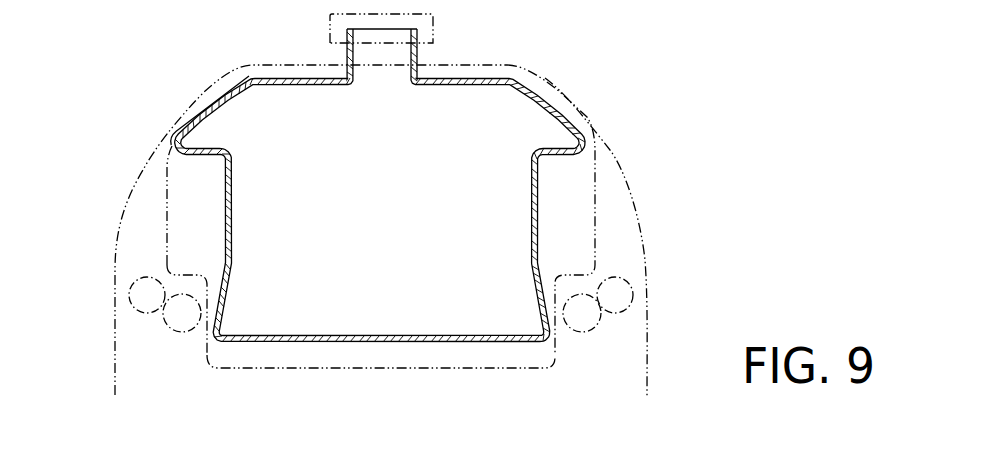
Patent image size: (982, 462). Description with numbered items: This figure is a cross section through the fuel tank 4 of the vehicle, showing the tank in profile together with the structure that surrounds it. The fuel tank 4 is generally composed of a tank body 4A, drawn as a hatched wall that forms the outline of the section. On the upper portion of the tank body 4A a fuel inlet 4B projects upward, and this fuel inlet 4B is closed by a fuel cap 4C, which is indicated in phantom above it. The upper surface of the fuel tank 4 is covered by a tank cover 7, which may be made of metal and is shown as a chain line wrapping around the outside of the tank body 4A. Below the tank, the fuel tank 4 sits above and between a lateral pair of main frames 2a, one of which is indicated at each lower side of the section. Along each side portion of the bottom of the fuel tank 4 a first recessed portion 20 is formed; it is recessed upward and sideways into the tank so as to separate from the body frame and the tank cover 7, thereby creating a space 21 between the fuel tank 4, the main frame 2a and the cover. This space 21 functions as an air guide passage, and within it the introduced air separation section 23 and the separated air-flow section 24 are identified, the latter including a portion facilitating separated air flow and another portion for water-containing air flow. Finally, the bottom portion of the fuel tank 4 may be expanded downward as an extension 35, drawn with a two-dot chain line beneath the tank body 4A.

The fuel tank 4 is at (618, 121).
The tank body 4A is at (544, 98).
The fuel inlet 4B is at (418, 53).
The fuel cap 4C is at (437, 25).
The tank cover 7 is at (140, 172).
The first recessed portion 20 is at (538, 233).
The extension 35 is at (532, 368).
The separated air-flow section 24 is at (558, 190).
The introduced air separation section 23 is at (565, 282).
The main frame 2a is at (128, 282).
The space (air guide passage) 21 is at (185, 337).